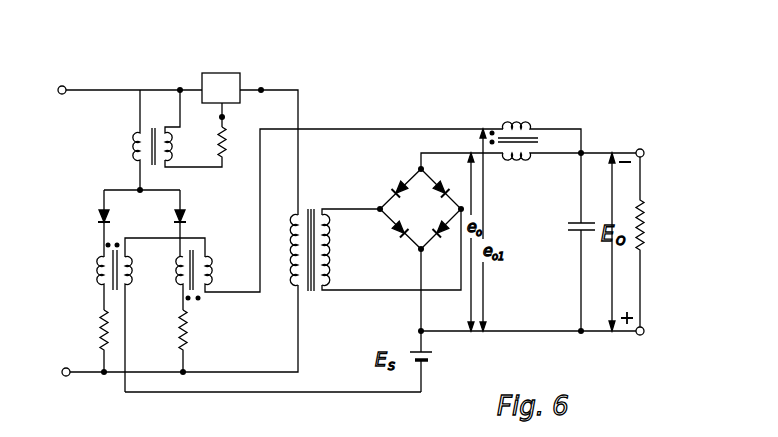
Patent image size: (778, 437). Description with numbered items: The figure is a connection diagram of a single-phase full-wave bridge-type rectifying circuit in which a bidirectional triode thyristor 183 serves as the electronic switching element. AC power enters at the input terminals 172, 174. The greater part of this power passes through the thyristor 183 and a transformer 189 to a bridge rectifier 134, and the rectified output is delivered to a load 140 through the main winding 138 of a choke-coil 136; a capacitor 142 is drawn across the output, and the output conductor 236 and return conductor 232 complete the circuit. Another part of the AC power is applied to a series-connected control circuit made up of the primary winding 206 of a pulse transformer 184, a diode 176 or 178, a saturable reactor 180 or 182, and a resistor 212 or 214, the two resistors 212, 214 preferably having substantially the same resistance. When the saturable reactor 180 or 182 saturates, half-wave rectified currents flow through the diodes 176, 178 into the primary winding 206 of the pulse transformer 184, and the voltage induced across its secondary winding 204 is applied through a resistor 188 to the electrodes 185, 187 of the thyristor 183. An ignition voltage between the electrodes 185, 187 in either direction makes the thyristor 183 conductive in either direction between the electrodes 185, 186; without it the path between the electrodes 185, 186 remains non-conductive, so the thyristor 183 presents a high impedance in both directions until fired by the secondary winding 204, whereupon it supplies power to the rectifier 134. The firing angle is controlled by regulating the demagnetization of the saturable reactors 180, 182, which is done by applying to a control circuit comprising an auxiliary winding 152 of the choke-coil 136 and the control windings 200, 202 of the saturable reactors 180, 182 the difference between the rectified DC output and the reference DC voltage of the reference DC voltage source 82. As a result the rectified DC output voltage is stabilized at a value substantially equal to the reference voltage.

The input terminal 172 is at (63, 86).
The input terminal 174 is at (65, 368).
The bidirectional triode thyristor 183 is at (267, 38).
The electrode 185 is at (180, 87).
The electrode 186 is at (261, 88).
The electrode 187 is at (224, 117).
The resistor 188 is at (226, 143).
The pulse transformer 184 is at (170, 113).
The primary winding 206 is at (138, 151).
The secondary winding 204 is at (168, 147).
The diode 176 is at (98, 216).
The diode 178 is at (187, 216).
The saturable reactor 180 is at (115, 293).
The control winding 200 is at (130, 270).
The saturable reactor 182 is at (250, 248).
The control winding 202 is at (213, 270).
The resistor 212 is at (110, 325).
The resistor 214 is at (188, 325).
The transformer 189 is at (337, 189).
The bridge rectifier 134 is at (432, 219).
The choke-coil 136 is at (540, 140).
The auxiliary winding 152 is at (533, 104).
The main winding 138 is at (508, 158).
The filter capacitor 142 is at (568, 227).
The load 140 is at (647, 232).
The common output conductor 236 is at (420, 313).
The reference DC voltage source 82 is at (432, 352).
The return conductor 232 is at (299, 394).